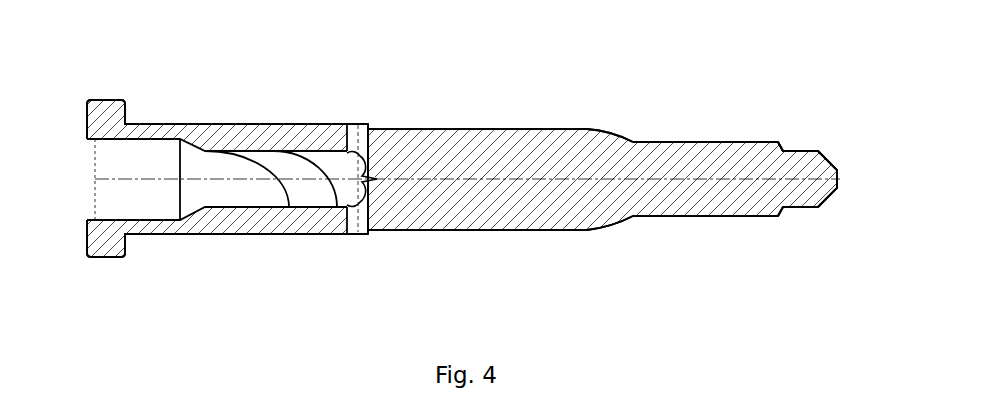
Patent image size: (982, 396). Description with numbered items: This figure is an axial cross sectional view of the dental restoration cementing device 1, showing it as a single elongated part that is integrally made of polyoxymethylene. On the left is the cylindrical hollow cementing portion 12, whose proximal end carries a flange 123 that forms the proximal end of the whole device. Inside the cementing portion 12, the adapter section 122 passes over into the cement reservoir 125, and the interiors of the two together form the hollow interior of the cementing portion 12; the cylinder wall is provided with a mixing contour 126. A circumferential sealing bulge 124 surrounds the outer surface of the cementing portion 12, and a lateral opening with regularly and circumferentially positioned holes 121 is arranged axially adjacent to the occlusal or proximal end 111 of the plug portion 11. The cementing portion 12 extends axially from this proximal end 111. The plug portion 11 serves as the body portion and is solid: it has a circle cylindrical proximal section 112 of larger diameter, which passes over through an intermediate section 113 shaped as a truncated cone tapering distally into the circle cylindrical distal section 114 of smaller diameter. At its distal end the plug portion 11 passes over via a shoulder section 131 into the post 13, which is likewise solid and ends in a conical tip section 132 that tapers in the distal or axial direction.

The dental restoration cementing device 1 is at (88, 56).
The plug portion 11 is at (602, 231).
The cementing portion 12 is at (807, 305).
The post 13 is at (807, 236).
The proximal end 111 is at (375, 128).
The proximal section 112 is at (507, 148).
The intermediate section 113 is at (598, 150).
The distal section 114 is at (695, 148).
The holes 121 is at (352, 133).
The adapter section 122 is at (139, 150).
The flange 123 is at (108, 110).
The sealing bulge 124 is at (338, 125).
The cement reservoir 125 is at (277, 170).
The mixing contour 126 is at (253, 152).
The shoulder section 131 is at (780, 143).
The tip section 132 is at (821, 170).